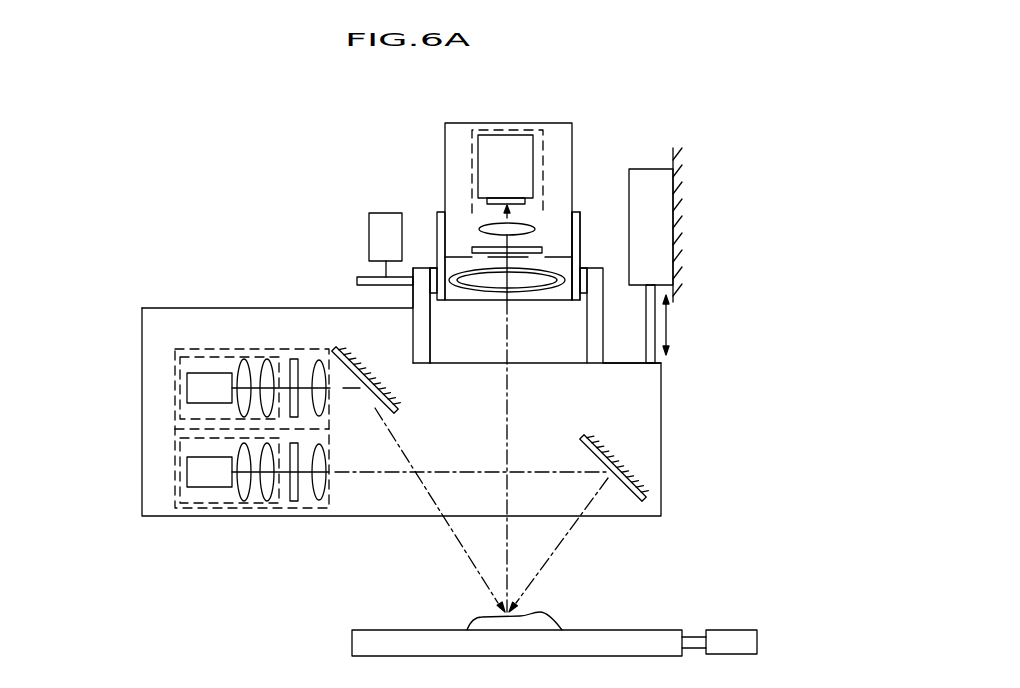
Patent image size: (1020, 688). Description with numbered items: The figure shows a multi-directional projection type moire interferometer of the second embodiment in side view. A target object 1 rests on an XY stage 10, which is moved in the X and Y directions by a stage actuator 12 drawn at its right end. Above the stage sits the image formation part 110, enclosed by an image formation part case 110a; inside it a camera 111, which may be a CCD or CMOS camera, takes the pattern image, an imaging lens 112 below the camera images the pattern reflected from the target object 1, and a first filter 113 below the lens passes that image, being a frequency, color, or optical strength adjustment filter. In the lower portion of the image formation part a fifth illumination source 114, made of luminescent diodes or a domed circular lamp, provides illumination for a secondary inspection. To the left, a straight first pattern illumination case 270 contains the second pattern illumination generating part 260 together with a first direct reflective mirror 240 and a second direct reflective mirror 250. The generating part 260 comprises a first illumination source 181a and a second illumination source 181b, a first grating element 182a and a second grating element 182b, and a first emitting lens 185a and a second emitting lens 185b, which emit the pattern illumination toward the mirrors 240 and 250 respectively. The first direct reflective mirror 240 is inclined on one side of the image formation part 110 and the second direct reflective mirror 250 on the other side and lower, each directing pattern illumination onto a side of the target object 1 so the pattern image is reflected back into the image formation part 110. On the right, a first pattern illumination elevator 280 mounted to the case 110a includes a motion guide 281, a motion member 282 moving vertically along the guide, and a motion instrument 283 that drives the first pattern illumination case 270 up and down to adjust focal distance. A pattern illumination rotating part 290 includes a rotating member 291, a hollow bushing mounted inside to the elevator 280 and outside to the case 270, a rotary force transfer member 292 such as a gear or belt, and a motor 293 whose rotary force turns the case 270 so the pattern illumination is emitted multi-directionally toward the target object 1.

The target object 1 is at (482, 623).
The XY stage 10 is at (392, 636).
The stage actuator 12 is at (738, 630).
The image formation part 110 is at (525, 128).
The image formation part case 110a is at (447, 123).
The camera 111 is at (498, 142).
The imaging lens 112 is at (534, 228).
The first filter 113 is at (545, 250).
The fifth illumination source 114 is at (550, 273).
The first illumination source 181a is at (199, 348).
The second illumination source 181b is at (213, 503).
The first grating element 182a is at (290, 354).
The second grating element 182b is at (288, 503).
The first emitting lens 185a is at (327, 356).
The second emitting lens 185b is at (313, 503).
The first direct reflective mirror 240 is at (393, 403).
The second direct reflective mirror 250 is at (641, 451).
The second pattern illumination generating part 260 is at (211, 425).
The first pattern illumination case 270 is at (662, 408).
The first pattern illumination elevator 280 is at (685, 255).
The motion guide 281 is at (580, 256).
The motion member 282 is at (587, 280).
The motion instrument 283 is at (663, 207).
The pattern illumination rotating part 290 is at (364, 244).
The rotating member 291 is at (405, 273).
The rotary force transfer member 292 is at (360, 277).
The motor 293 is at (383, 220).